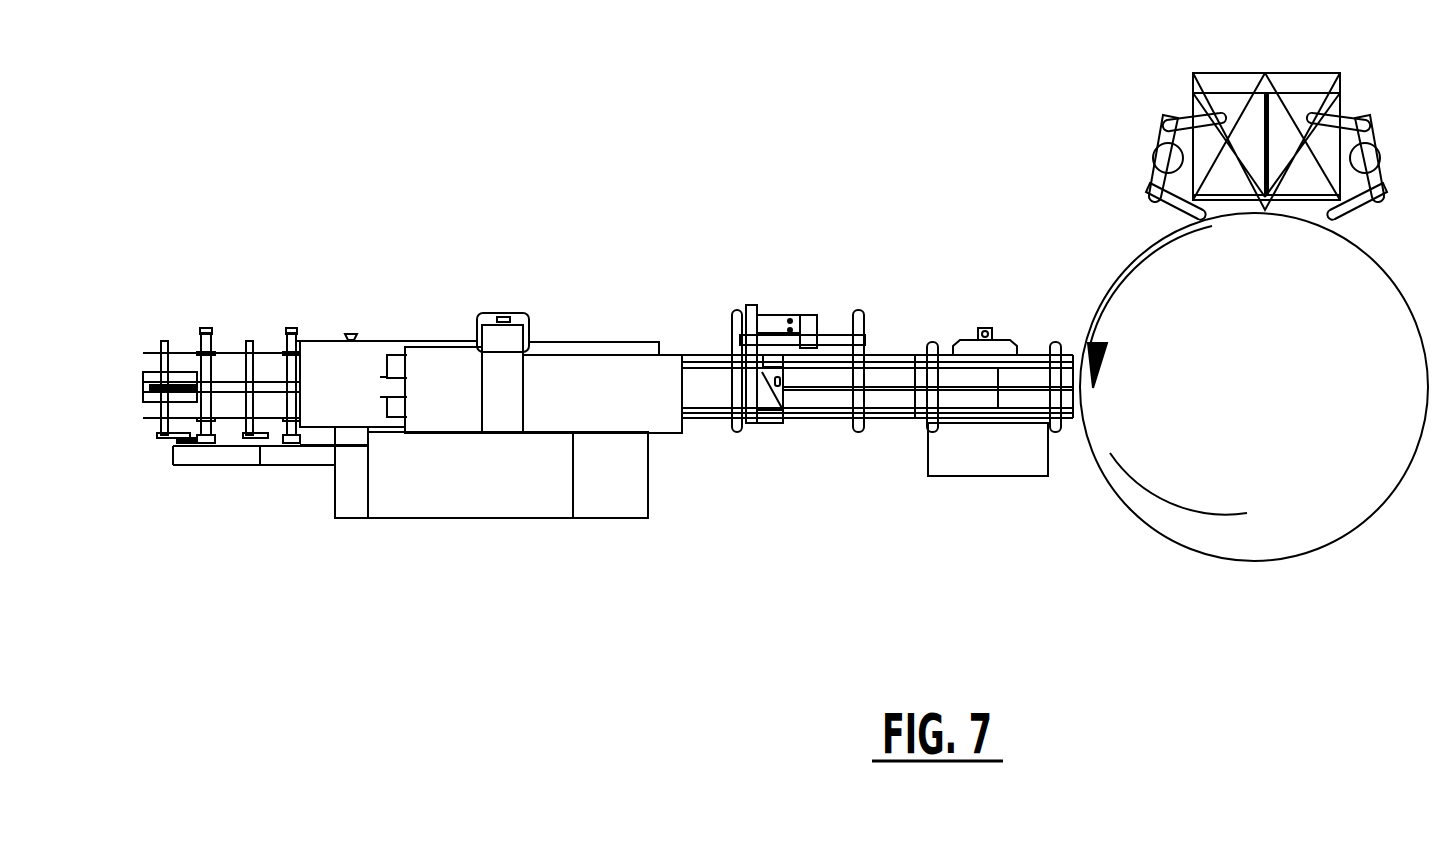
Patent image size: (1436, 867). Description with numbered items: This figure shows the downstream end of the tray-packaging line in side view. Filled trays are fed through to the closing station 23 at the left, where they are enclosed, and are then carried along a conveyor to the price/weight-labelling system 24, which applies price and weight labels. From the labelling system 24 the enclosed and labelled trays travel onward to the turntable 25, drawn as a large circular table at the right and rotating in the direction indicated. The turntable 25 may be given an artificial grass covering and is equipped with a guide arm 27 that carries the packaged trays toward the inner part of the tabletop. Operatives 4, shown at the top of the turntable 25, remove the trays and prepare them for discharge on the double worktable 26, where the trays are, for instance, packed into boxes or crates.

The operatives 4 is at (1165, 127).
The closing station 23 is at (245, 272).
The price/weight-labelling system 24 is at (803, 262).
The turntable 25 is at (1352, 505).
The double worktable 26 is at (1243, 80).
The guide arm 27 is at (1152, 505).